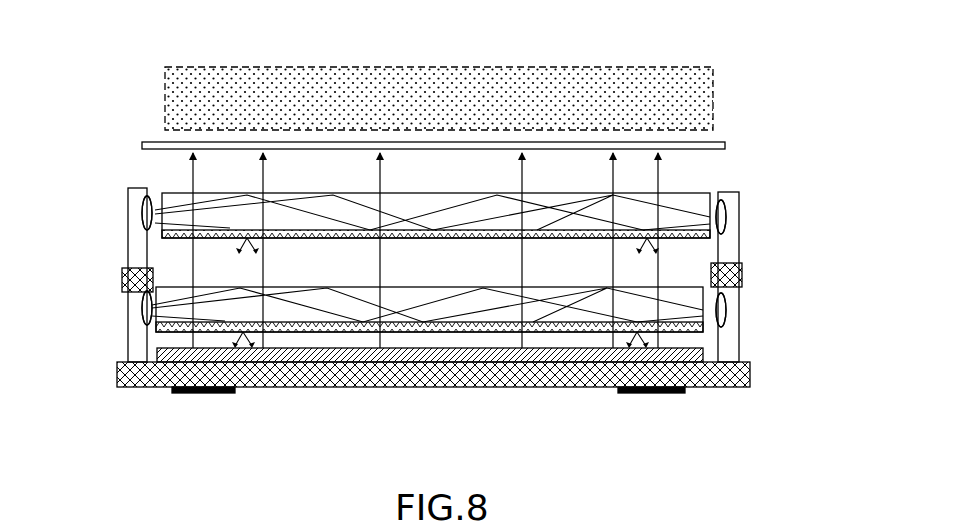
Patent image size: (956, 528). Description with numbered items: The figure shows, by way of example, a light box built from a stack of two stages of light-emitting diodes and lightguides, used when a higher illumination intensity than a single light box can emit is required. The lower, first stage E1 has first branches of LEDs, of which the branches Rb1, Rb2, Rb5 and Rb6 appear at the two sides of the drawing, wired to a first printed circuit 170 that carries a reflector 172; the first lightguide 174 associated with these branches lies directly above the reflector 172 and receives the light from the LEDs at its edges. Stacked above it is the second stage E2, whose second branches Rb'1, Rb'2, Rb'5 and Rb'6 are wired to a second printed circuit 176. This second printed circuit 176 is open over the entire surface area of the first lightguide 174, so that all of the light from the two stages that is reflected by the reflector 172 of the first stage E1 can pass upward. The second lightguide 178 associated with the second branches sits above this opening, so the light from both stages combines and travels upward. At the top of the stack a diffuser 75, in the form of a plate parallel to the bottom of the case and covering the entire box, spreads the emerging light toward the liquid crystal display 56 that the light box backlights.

The liquid crystal display 56 is at (503, 85).
The diffuser 75 is at (142, 146).
The second branch of LEDs Rb'1 is at (89, 258).
The second branch of LEDs Rb'2 is at (89, 210).
The second branch of LEDs Rb'5 is at (768, 266).
The second branch of LEDs Rb'6 is at (768, 217).
The first branch of LEDs Rb1 is at (137, 343).
The first branch of LEDs Rb2 is at (89, 357).
The first branch of LEDs Rb5 is at (730, 337).
The first branch of LEDs Rb6 is at (771, 340).
The second stage E2 is at (108, 248).
The first stage E1 is at (114, 337).
The second printed circuit 176 is at (122, 279).
The second lightguide 178 is at (475, 220).
The first lightguide 174 is at (495, 312).
The reflector 172 is at (435, 353).
The first printed circuit 170 is at (493, 380).